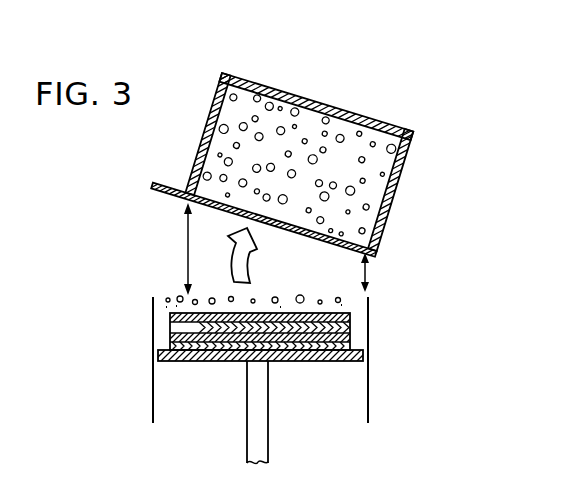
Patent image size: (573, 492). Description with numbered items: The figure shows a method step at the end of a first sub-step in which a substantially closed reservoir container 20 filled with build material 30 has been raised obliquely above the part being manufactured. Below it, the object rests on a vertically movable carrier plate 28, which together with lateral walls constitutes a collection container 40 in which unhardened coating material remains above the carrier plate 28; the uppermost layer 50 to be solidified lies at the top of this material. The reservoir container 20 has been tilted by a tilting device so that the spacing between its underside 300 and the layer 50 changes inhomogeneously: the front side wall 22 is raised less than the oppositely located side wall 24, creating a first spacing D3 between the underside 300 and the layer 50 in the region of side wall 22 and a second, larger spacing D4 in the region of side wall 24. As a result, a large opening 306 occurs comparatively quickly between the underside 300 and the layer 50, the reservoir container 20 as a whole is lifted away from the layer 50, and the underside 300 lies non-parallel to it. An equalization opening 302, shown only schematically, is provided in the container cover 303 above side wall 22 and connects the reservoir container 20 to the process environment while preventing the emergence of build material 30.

The reservoir container 20 is at (412, 184).
The side wall 22 is at (388, 218).
The side wall 24 is at (191, 160).
The carrier plate 28 is at (327, 362).
The build material 30 is at (317, 130).
The collection container 40 is at (153, 400).
The layer to be solidified 50 is at (171, 313).
The underside 300 is at (296, 238).
The equalization opening 302 is at (390, 120).
The container cover 303 is at (362, 120).
The opening 306 is at (138, 240).
The first spacing D3 is at (367, 272).
The second spacing D4 is at (187, 258).